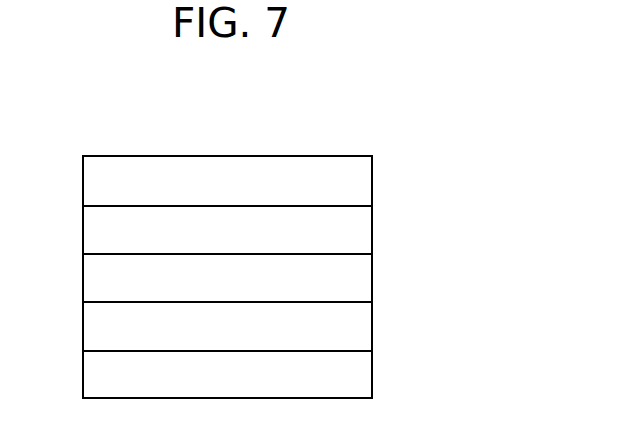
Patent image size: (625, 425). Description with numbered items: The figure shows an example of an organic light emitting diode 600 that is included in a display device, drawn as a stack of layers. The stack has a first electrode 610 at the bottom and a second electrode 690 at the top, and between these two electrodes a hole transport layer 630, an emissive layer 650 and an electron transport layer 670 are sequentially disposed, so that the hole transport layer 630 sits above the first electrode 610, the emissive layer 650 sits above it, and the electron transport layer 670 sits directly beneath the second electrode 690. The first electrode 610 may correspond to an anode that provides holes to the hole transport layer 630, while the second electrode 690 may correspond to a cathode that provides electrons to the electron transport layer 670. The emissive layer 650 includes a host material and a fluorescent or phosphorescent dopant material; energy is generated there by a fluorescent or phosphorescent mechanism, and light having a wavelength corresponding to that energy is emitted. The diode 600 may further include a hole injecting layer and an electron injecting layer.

The organic light emitting diode 600 is at (206, 100).
The first electrode 610 is at (374, 372).
The hole transport layer 630 is at (374, 323).
The emissive layer 650 is at (374, 275).
The electron transport layer 670 is at (374, 227).
The second electrode 690 is at (374, 177).